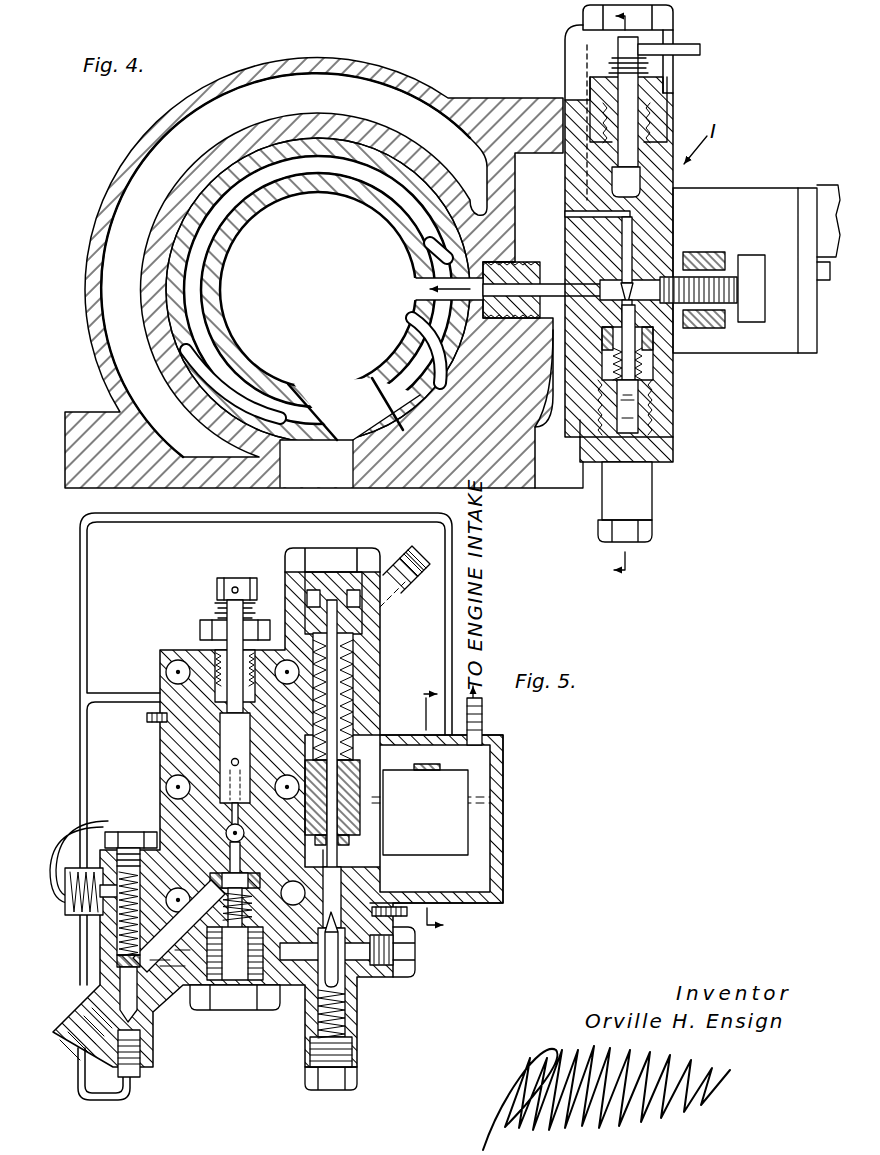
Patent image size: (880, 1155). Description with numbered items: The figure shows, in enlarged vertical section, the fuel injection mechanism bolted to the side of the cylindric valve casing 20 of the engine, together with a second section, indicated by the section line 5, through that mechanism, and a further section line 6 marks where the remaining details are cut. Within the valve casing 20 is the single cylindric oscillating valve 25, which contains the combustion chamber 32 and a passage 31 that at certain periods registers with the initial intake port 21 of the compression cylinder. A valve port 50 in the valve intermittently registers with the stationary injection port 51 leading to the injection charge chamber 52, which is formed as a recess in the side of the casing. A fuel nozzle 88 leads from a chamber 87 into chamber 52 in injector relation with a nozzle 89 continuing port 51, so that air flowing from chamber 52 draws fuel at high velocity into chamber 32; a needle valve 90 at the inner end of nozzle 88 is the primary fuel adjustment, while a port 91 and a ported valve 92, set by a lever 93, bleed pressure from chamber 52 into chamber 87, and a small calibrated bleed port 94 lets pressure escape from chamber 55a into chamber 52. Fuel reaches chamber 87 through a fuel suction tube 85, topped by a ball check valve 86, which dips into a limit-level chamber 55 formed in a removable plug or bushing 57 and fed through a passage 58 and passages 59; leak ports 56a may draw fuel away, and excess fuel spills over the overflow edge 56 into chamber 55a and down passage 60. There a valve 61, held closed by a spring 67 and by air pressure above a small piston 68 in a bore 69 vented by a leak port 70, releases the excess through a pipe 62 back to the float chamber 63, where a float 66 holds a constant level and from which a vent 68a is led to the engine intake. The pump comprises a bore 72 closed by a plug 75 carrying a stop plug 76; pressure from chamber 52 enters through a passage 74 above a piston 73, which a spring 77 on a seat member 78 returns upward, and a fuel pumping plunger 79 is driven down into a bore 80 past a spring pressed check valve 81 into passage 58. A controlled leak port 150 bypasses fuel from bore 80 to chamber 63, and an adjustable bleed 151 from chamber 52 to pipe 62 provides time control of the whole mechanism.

In FIG. 4, the valve casing 20 is at (427, 79).
In FIG. 4, the cylindric oscillating valve 25 is at (347, 134).
In FIG. 4, the combustion chamber 32 is at (318, 290).
In FIG. 4, the passage 31 is at (316, 330).
In FIG. 4, the initial intake port 21 is at (350, 432).
In FIG. 4, the valve port 50 is at (416, 289).
In FIG. 4, the stationary injection port 51 is at (492, 262).
In FIG. 4, the fuel nozzle 88 is at (550, 274).
In FIG. 5, the fuel nozzle 88 is at (222, 823).
In FIG. 4, the nozzle 89 is at (542, 309).
In FIG. 4, the calibrated bleed port 94 is at (553, 338).
In FIG. 4, the chamber 55a is at (600, 393).
In FIG. 5, the chamber 55a is at (219, 910).
In FIG. 4, the injection charge chamber 52 is at (565, 187).
In FIG. 5, the injection charge chamber 52 is at (147, 718).
In FIG. 4, the passage 74 is at (563, 163).
In FIG. 5, the passage 74 is at (352, 575).
In FIG. 4, the port 91 is at (575, 214).
In FIG. 4, the ported valve 92 is at (674, 192).
In FIG. 5, the ported valve 92 is at (228, 772).
In FIG. 4, the lever or handle 93 is at (700, 50).
In FIG. 5, the lever or handle 93 is at (216, 592).
In FIG. 4, the plug 75 is at (673, 21).
In FIG. 5, the plug 75 is at (311, 562).
In FIG. 4, the needle valve 90 is at (668, 252).
In FIG. 4, the chamber 87 is at (673, 262).
In FIG. 4, the ball check valve 86 is at (640, 318).
In FIG. 5, the ball check valve 86 is at (226, 833).
In FIG. 4, the fuel suction tube 85 is at (652, 300).
In FIG. 5, the fuel suction tube 85 is at (327, 852).
In FIG. 4, the overflow edge 56 is at (653, 340).
In FIG. 5, the overflow edge 56 is at (294, 892).
In FIG. 4, the leak ports 56a is at (642, 372).
In FIG. 5, the leak ports 56a is at (326, 1000).
In FIG. 4, the passage 58 is at (655, 380).
In FIG. 5, the passage 58 is at (295, 961).
In FIG. 4, the limit-level chamber 55 is at (640, 405).
In FIG. 5, the limit-level chamber 55 is at (236, 962).
In FIG. 4, the removable plug or bushing 57 is at (655, 425).
In FIG. 5, the removable plug or bushing 57 is at (214, 888).
In FIG. 4, the section line 5 is at (629, 293).
In FIG. 5, the pipe 62 is at (90, 584).
In FIG. 5, the stop plug 76 is at (308, 598).
In FIG. 5, the spring returned piston 73 is at (352, 625).
In FIG. 5, the bore 72 is at (360, 698).
In FIG. 5, the spring 77 is at (352, 722).
In FIG. 5, the seat member 78 is at (350, 776).
In FIG. 5, the fuel pumping plunger 79 is at (349, 840).
In FIG. 5, the adjustable bleed 151 is at (165, 683).
In FIG. 5, the bore 69 is at (103, 852).
In FIG. 5, the leak port 70 is at (68, 910).
In FIG. 5, the spring 67 is at (118, 922).
In FIG. 5, the small piston 68 is at (120, 962).
In FIG. 5, the passage 60 is at (179, 926).
In FIG. 5, the valve 61 is at (150, 1004).
In FIG. 5, the passages 59 is at (247, 985).
In FIG. 5, the bore 80 is at (337, 886).
In FIG. 5, the controlled leak port 150 is at (382, 906).
In FIG. 5, the check valve 81 is at (362, 976).
In FIG. 5, the float chamber 63 is at (497, 761).
In FIG. 5, the float 66 is at (425, 809).
In FIG. 5, the vent tube 68a is at (484, 714).
In FIG. 5, the section line 6 is at (436, 808).